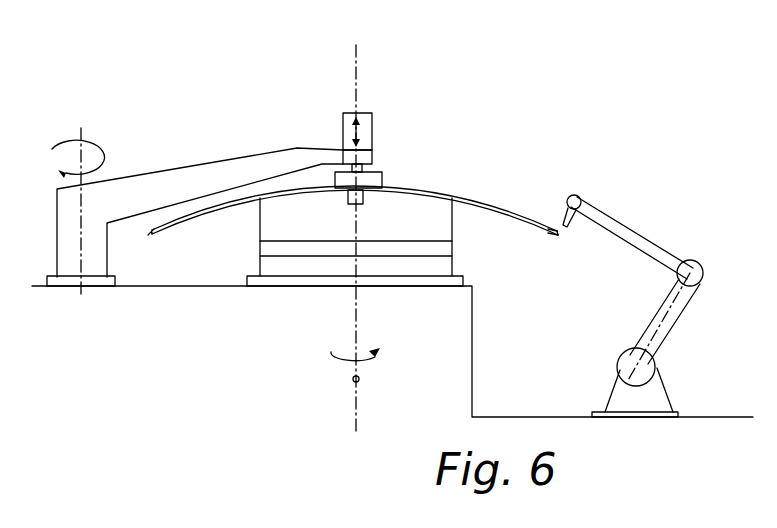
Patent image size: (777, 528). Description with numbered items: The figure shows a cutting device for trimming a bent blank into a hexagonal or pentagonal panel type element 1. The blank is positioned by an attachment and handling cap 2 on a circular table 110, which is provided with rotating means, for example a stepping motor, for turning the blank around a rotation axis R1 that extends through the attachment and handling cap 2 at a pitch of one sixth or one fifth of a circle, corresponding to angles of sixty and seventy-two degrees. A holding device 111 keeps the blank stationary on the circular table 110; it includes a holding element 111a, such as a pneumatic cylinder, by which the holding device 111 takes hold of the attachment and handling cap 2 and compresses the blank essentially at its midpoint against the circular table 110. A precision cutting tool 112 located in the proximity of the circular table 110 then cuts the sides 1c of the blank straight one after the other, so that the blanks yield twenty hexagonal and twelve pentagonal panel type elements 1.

The holding device 111 is at (208, 135).
The holding element 111a is at (372, 130).
The attachment and handling cap 2 is at (366, 199).
The panel type element 1 is at (496, 207).
The side of the blank 1c is at (560, 237).
The circular table 110 is at (443, 228).
The precision cutting tool 112 is at (694, 300).
The rotation axis R1 is at (350, 401).